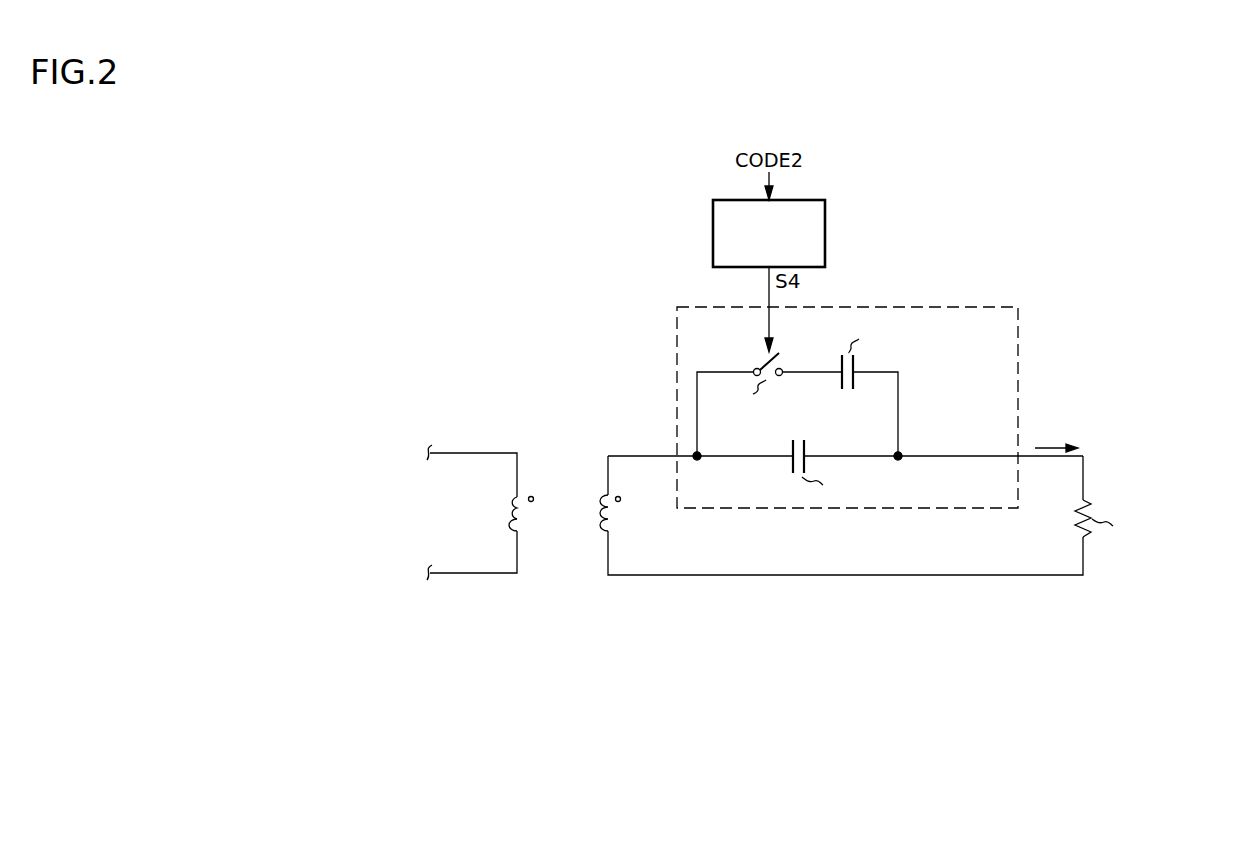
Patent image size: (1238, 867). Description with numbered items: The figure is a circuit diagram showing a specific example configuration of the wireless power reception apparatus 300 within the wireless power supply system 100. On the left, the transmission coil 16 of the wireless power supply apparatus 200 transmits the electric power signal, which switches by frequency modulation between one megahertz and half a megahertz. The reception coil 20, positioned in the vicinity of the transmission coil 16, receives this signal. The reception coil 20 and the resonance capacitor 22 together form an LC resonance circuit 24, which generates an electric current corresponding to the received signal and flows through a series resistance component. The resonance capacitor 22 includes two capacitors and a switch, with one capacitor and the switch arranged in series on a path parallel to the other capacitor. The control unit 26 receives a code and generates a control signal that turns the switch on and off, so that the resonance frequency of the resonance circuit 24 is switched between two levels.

The transmission coil 16 is at (508, 514).
The reception coil 20 is at (669, 516).
The resonance capacitor 22 is at (918, 509).
The resonance circuit 24 is at (899, 537).
The control unit 26 is at (828, 236).
The wireless power supply system 100 is at (608, 763).
The wireless power supply apparatus 200 is at (460, 547).
The wireless power reception apparatus 300 is at (1160, 654).